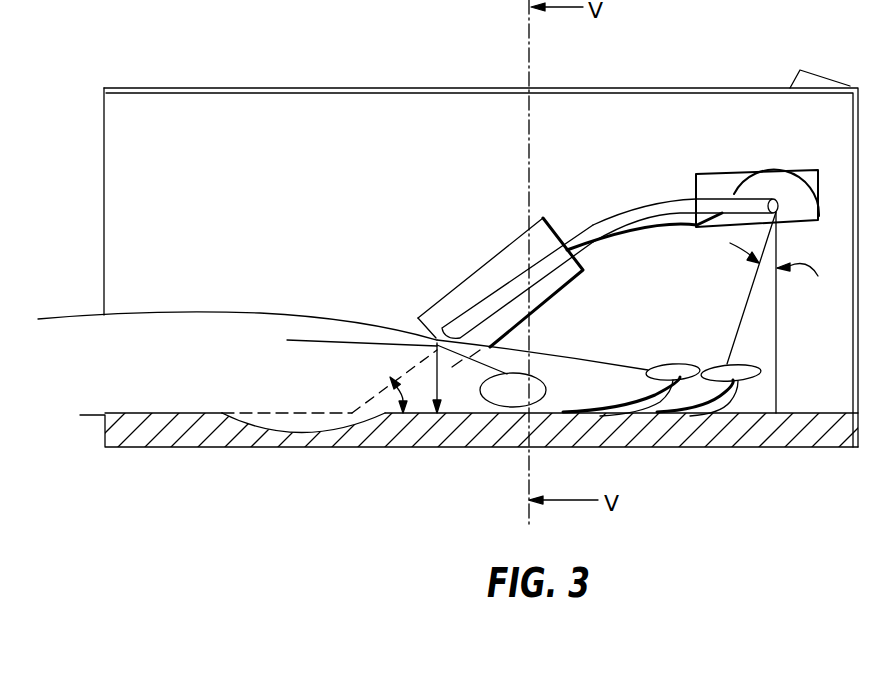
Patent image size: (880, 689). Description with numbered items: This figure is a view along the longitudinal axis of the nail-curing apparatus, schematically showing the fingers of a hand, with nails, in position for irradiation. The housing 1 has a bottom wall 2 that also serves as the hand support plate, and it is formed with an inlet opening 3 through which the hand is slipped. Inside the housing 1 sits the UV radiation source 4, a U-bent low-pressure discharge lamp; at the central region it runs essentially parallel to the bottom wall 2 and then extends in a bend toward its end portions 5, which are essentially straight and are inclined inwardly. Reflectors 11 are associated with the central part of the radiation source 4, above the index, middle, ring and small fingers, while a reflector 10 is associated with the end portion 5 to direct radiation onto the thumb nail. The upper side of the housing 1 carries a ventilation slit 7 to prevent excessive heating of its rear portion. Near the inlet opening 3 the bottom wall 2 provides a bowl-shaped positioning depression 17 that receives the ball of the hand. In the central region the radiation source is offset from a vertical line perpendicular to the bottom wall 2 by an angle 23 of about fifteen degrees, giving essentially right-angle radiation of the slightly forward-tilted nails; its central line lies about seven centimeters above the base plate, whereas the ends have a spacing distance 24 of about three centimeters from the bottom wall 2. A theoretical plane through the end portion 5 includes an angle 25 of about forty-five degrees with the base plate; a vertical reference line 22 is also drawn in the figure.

The housing 1 is at (770, 88).
The bottom wall 2 is at (795, 445).
The inlet opening 3 is at (104, 152).
The UV radiation source 4 is at (648, 208).
The end portions of the radiation source 5 is at (463, 317).
The ventilation slit 7 is at (812, 78).
The reflector 10 is at (512, 250).
The reflector 11 is at (732, 177).
The positioning depression 17 is at (313, 428).
The vertical reference line 22 is at (778, 331).
The angle 23 is at (812, 280).
The spacing distance 24 is at (443, 380).
The angle 25 is at (389, 410).